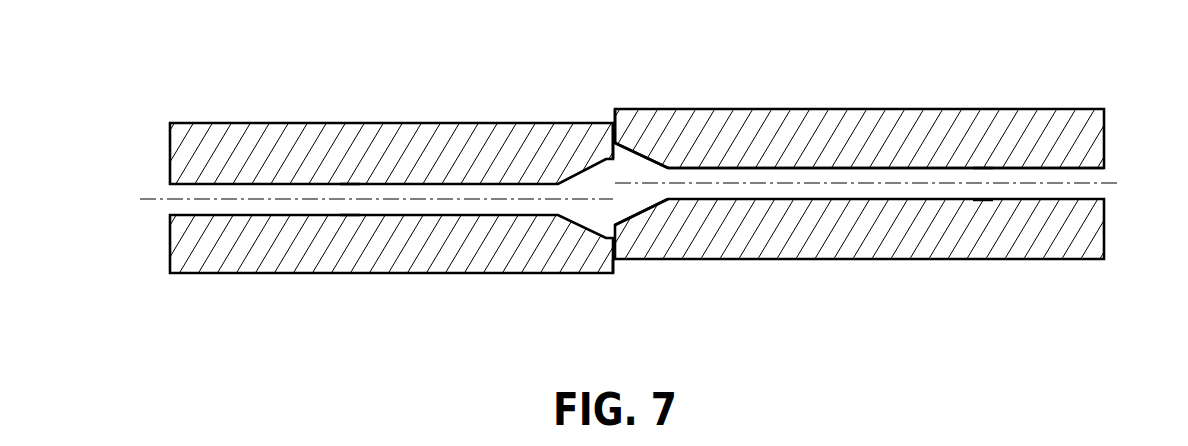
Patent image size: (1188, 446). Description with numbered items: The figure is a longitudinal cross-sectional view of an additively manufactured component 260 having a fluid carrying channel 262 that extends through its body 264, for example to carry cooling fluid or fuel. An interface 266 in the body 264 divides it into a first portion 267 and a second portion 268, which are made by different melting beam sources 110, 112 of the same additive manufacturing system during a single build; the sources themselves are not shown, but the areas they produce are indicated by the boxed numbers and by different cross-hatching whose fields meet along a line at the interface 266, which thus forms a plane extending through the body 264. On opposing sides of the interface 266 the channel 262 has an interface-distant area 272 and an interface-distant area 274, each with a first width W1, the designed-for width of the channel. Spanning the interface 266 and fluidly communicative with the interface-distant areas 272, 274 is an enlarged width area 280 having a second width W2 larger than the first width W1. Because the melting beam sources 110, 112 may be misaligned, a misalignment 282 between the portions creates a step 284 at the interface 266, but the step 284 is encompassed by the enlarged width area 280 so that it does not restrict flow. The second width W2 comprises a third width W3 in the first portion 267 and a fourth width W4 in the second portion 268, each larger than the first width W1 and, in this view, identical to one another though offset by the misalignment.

The melting beam source 110 is at (389, 213).
The melting beam source 112 is at (852, 205).
The additively manufactured component 260 is at (1099, 97).
The channel 262 is at (257, 206).
The body 264 is at (885, 143).
The interface 266 is at (613, 109).
The first portion 267 is at (613, 334).
The second portion 268 is at (1104, 334).
The interface-distant area 272 is at (186, 161).
The interface-distant area 274 is at (1046, 146).
The enlarged width area 280 is at (650, 141).
The misalignment 282 is at (672, 223).
The step 284 is at (617, 229).
The first width W1 is at (350, 223).
The second width W2 is at (536, 238).
The third width W3 is at (595, 167).
The fourth width W4 is at (641, 225).